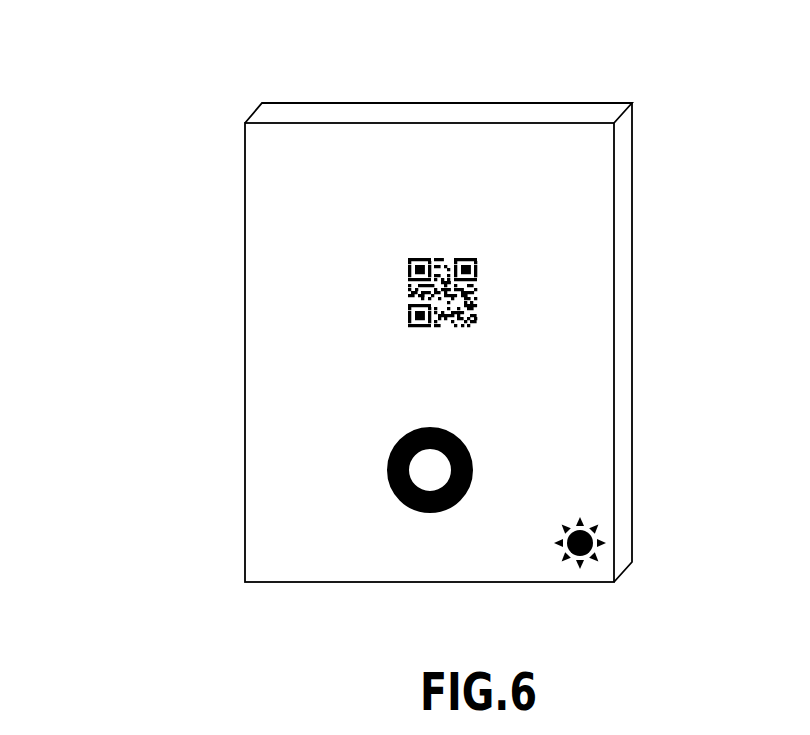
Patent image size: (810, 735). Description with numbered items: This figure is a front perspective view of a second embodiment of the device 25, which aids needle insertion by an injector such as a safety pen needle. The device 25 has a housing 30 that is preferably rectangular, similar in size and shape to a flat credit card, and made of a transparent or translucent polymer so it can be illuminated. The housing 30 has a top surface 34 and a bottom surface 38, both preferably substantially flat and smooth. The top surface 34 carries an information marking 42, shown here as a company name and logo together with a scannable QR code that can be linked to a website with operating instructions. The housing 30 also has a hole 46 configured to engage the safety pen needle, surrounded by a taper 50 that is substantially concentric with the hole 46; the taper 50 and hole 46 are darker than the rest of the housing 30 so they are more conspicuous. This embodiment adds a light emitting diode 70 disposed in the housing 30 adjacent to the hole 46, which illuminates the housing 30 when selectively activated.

The device 25 is at (108, 123).
The housing 30 is at (267, 297).
The top surface 34 is at (607, 203).
The bottom surface 38 is at (632, 245).
The information marking 42 is at (445, 188).
The hole 46 is at (430, 478).
The taper 50 is at (392, 455).
The light emitting diode 70 is at (592, 530).